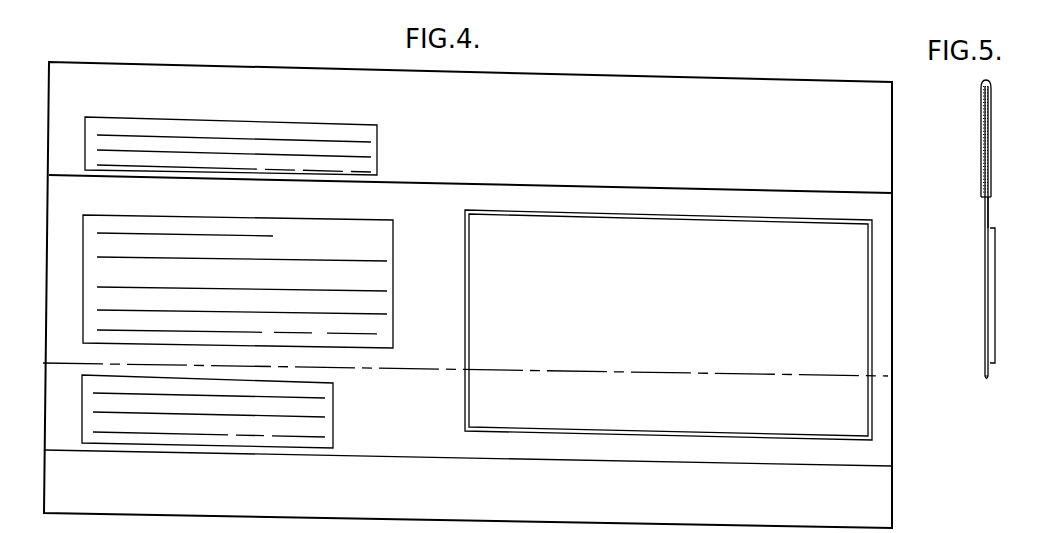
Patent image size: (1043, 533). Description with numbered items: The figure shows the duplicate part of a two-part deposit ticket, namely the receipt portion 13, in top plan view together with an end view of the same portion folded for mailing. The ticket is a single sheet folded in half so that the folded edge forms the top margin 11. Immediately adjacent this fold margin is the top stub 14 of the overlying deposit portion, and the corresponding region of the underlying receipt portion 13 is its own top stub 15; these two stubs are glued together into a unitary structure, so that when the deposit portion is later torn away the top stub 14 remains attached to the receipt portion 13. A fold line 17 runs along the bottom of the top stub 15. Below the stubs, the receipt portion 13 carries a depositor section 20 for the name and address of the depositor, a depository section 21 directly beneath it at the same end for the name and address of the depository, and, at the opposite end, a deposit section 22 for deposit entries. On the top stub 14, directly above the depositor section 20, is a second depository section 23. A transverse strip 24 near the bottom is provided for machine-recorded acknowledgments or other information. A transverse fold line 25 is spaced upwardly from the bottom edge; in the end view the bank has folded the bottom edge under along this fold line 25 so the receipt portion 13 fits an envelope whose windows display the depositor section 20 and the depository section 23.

In FIG. 4, the top margin 11 is at (546, 72).
In FIG. 5, the top margin 11 is at (990, 80).
In FIG. 4, the receipt portion 13 is at (883, 452).
In FIG. 5, the receipt portion 13 is at (983, 253).
In FIG. 4, the top stub 14 is at (655, 87).
In FIG. 5, the top stub 14 is at (979, 129).
In FIG. 5, the top stub 15 is at (991, 130).
In FIG. 5, the fold line 17 is at (990, 200).
In FIG. 4, the depositor section 20 is at (395, 239).
In FIG. 4, the depository section 21 is at (336, 401).
In FIG. 4, the deposit section 22 is at (463, 419).
In FIG. 4, the second depository section 23 is at (241, 120).
In FIG. 4, the transverse strip 24 is at (382, 483).
In FIG. 4, the transverse fold line 25 is at (584, 371).
In FIG. 5, the transverse fold line 25 is at (986, 381).